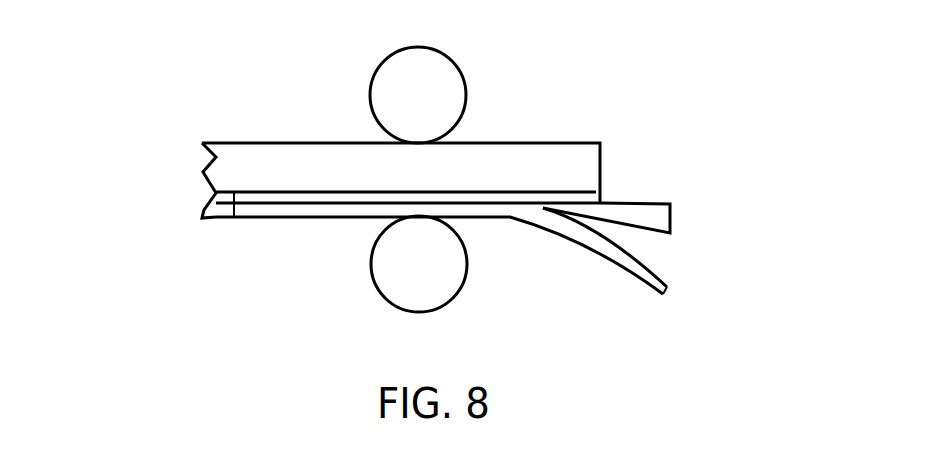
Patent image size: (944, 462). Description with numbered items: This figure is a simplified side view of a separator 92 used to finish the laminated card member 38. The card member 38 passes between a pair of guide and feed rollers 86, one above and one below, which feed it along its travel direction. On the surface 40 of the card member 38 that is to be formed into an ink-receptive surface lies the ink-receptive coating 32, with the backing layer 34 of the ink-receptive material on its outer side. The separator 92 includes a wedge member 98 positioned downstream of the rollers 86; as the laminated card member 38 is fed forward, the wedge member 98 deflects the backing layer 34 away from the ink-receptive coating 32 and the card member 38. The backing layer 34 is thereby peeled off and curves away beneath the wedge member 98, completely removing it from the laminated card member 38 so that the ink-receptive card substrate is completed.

The card member 38 is at (585, 153).
The ink-receptive coating 32 is at (215, 197).
The wedge member 98 is at (672, 218).
The backing layer 34 is at (668, 293).
The surface of card member 40 is at (234, 193).
The guide and feed rollers 86 is at (430, 48).
The separator 92 is at (677, 177).